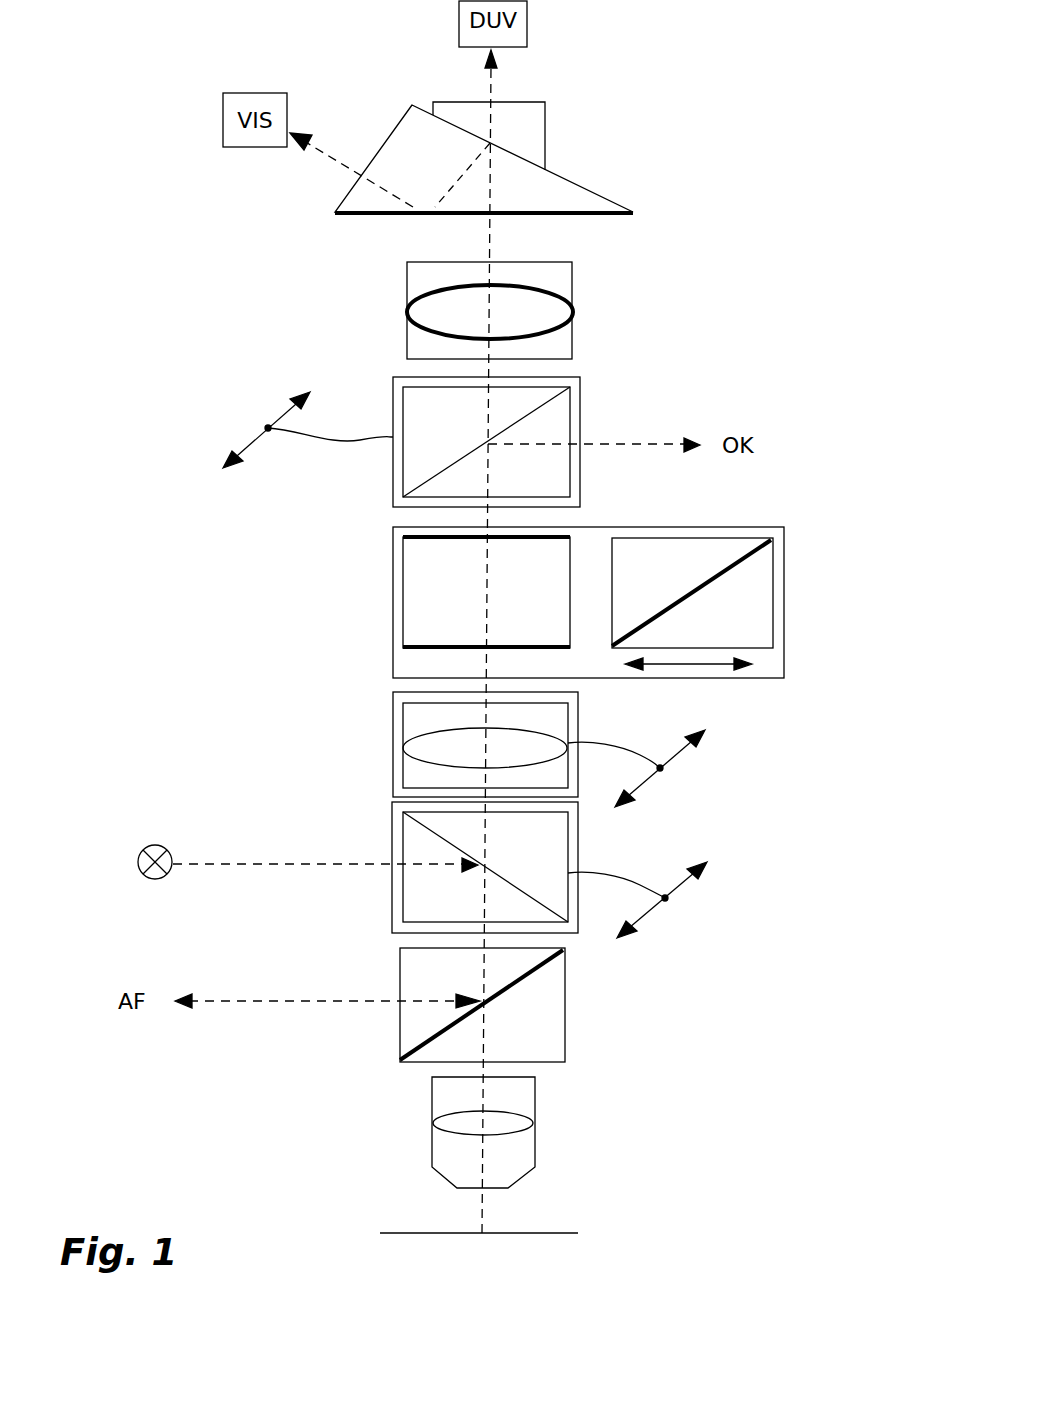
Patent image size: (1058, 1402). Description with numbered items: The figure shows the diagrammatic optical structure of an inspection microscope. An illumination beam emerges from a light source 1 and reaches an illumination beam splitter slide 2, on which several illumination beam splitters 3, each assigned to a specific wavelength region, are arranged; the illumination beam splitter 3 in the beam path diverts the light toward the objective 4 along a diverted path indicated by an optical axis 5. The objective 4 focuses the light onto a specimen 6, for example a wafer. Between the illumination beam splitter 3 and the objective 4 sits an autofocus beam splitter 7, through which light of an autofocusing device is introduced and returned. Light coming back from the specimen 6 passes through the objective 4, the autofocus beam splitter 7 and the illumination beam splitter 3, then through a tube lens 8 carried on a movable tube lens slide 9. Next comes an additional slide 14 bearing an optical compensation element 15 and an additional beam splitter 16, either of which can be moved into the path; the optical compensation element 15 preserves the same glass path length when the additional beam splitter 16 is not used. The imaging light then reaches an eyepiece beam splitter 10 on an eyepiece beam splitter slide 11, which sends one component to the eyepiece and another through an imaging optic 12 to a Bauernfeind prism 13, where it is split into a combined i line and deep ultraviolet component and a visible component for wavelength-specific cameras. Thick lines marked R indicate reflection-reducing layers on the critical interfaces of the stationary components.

The light source 1 is at (140, 857).
The illumination beam splitter slide 2 is at (568, 818).
The illumination beam splitter 3 is at (415, 845).
The objective 4 is at (523, 1108).
The optical axis 5 is at (480, 1210).
The specimen 6 is at (562, 1233).
The autofocus beam splitter 7 is at (553, 1038).
The tube lens 8 is at (430, 750).
The tube lens slide 9 is at (570, 712).
The eyepiece beam splitter 10 is at (422, 473).
The eyepiece beam splitter slide 11 is at (393, 388).
The imaging optic 12 is at (552, 310).
The Bauernfeind prism 13 is at (547, 197).
The additional slide 14 is at (775, 592).
The optical compensation element 15 is at (433, 575).
The additional beam splitter 16 is at (745, 625).
The reflection-reducing layer R is at (570, 217).